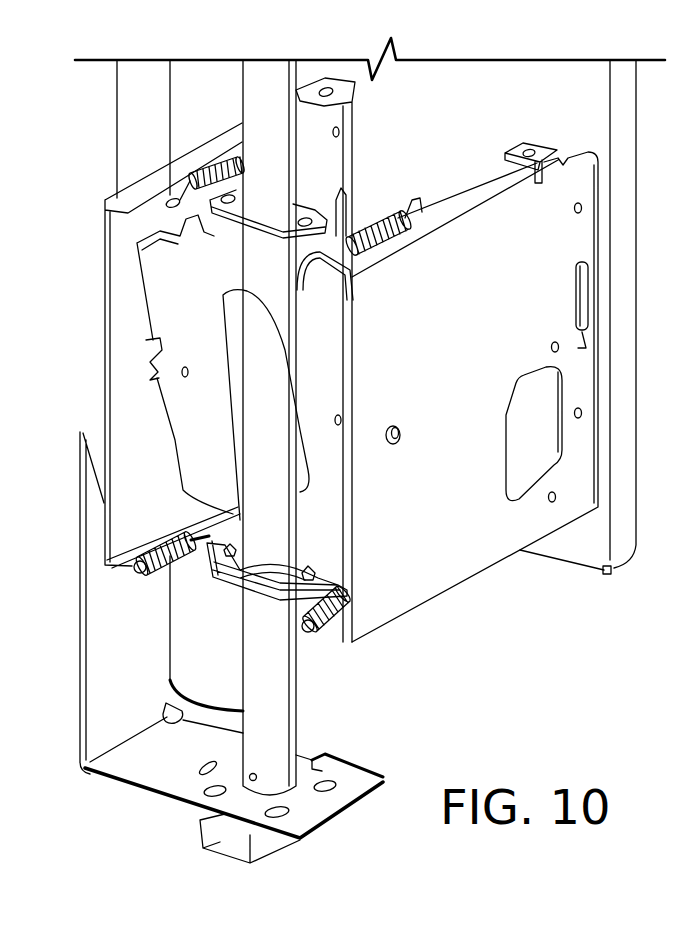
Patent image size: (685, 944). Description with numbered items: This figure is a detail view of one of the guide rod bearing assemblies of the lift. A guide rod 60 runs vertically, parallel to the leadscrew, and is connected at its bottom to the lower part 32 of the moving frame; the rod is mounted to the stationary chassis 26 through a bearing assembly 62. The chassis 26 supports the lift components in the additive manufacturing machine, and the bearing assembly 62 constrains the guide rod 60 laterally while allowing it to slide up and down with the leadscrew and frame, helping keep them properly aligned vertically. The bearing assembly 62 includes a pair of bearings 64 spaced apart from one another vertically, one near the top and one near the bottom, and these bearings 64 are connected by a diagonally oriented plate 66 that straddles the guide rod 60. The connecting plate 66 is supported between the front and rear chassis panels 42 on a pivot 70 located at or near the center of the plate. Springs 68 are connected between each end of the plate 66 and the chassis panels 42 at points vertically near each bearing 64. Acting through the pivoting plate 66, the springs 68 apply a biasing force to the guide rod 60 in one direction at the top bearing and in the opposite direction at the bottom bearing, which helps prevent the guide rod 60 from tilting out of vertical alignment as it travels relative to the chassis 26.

The chassis 26 is at (563, 550).
The lower part of frame 32 is at (143, 775).
The chassis panels 42 is at (104, 362).
The guide rod 60 is at (277, 705).
The bearing assembly 62 is at (423, 158).
The bearings 64 is at (304, 207).
The connecting plate 66 is at (190, 448).
The springs 68 is at (205, 175).
The pivot 70 is at (146, 352).